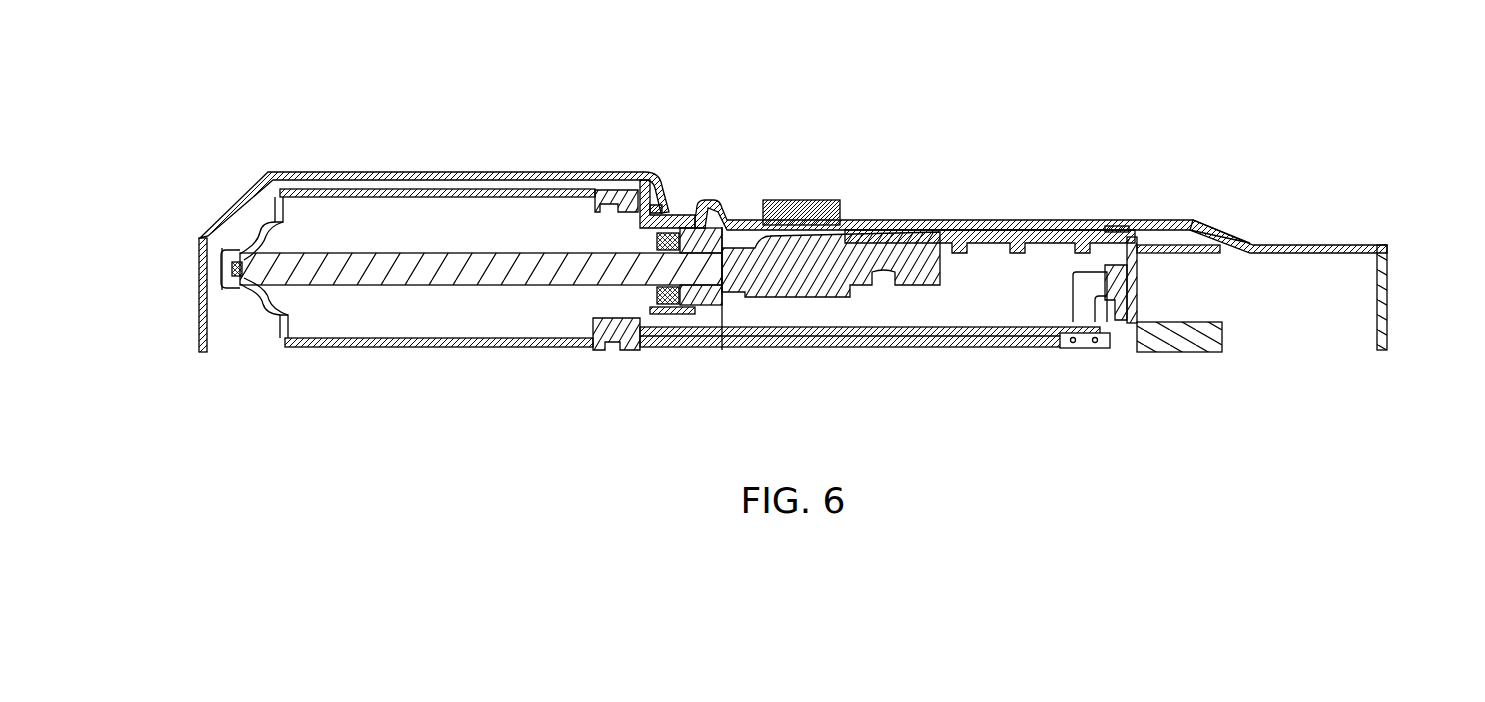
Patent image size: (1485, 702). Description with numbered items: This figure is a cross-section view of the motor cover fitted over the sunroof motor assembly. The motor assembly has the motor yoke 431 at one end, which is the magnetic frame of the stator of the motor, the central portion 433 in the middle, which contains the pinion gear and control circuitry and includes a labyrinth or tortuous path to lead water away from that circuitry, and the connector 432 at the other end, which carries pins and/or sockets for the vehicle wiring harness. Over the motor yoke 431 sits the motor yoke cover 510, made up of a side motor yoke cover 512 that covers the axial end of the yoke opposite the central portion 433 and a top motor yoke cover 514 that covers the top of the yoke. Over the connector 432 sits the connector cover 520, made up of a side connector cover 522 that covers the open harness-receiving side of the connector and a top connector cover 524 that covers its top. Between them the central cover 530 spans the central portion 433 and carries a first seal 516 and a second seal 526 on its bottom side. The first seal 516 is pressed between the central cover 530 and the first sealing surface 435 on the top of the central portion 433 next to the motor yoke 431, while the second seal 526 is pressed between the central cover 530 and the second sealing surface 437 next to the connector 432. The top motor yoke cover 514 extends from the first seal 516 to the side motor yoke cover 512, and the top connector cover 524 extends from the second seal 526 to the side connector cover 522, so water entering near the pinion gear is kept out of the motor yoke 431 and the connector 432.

The motor yoke cover 510 is at (203, 197).
The side motor yoke cover 512 is at (198, 300).
The top motor yoke cover 514 is at (352, 172).
The first seal 516 is at (658, 210).
The connector cover 520 is at (1357, 218).
The side connector cover 522 is at (1387, 310).
The top connector cover 524 is at (1293, 243).
The second seal 526 is at (1115, 230).
The central cover 530 is at (998, 220).
The motor yoke 431 is at (365, 322).
The connector 432 is at (1163, 352).
The central portion 433 is at (882, 240).
The first sealing surface 435 is at (675, 218).
The second sealing surface 437 is at (1095, 232).